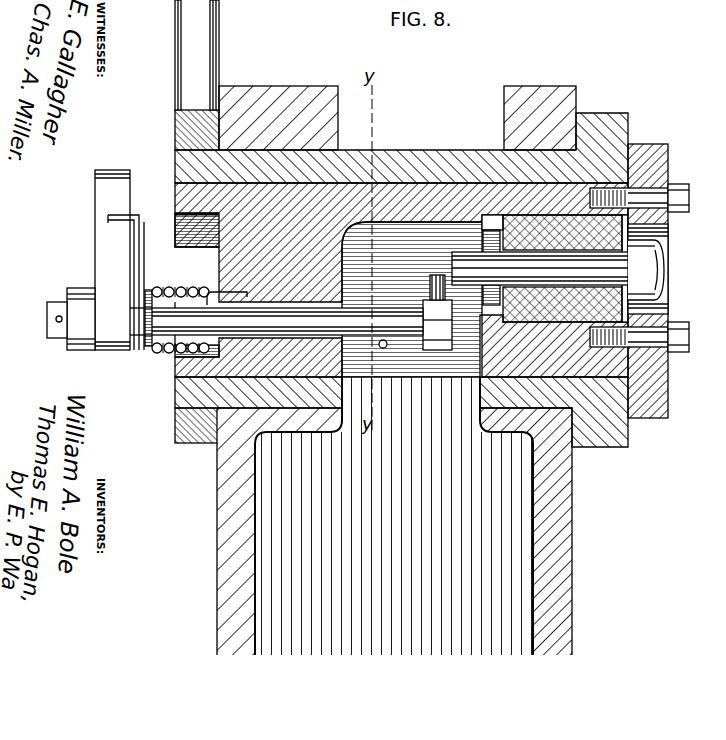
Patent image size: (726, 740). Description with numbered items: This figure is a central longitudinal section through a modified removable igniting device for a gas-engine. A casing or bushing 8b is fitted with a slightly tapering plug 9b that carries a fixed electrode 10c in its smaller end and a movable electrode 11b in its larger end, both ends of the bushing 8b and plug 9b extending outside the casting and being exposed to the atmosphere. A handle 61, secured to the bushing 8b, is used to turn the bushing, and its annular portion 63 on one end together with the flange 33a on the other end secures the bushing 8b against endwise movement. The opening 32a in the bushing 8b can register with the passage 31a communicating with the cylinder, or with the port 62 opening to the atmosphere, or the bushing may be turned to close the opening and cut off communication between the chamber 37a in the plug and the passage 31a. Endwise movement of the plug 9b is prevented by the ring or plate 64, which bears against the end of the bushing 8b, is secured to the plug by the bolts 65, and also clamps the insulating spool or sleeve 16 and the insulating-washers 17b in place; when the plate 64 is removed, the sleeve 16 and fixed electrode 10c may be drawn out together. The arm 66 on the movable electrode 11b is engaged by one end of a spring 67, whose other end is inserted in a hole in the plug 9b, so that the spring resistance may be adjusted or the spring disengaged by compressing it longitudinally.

The handle 61 is at (197, 75).
The annular portion of the handle 63 is at (182, 125).
The port 62 is at (495, 118).
The flange 33a is at (605, 119).
The casing or bushing 8b is at (479, 162).
The plug 9b is at (401, 280).
The insulating spool or sleeve 16 is at (555, 346).
The opening or port in the bushing 32a is at (411, 404).
The passage 31a is at (394, 543).
The chamber 37a is at (412, 299).
The insulating-washers 17b is at (500, 216).
The ring or plate 64 is at (662, 166).
The fixed electrode 10c is at (558, 268).
The bolts 65 is at (698, 200).
The movable electrode 11b is at (259, 318).
The spring 67 is at (165, 354).
The arm 66 is at (95, 260).